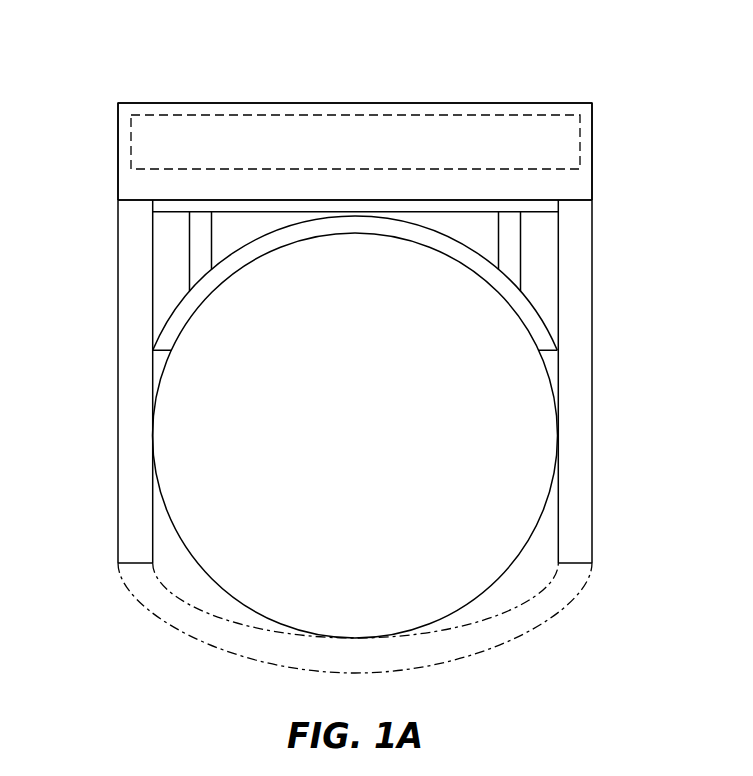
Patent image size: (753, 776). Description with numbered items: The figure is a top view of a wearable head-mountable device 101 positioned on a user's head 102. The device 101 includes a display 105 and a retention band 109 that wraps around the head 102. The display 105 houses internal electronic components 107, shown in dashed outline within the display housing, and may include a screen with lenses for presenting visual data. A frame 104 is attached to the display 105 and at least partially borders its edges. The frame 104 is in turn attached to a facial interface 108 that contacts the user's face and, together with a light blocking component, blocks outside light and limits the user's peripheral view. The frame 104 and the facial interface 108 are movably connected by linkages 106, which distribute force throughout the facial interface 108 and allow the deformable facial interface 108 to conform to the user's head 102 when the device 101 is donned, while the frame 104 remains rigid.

The head-mountable device 101 is at (546, 56).
The user's head 102 is at (378, 451).
The frame 104 is at (176, 212).
The display 105 is at (592, 150).
The linkages 106 is at (190, 253).
The internal electronic components 107 is at (204, 122).
The facial interface 108 is at (173, 316).
The retention band 109 is at (592, 331).